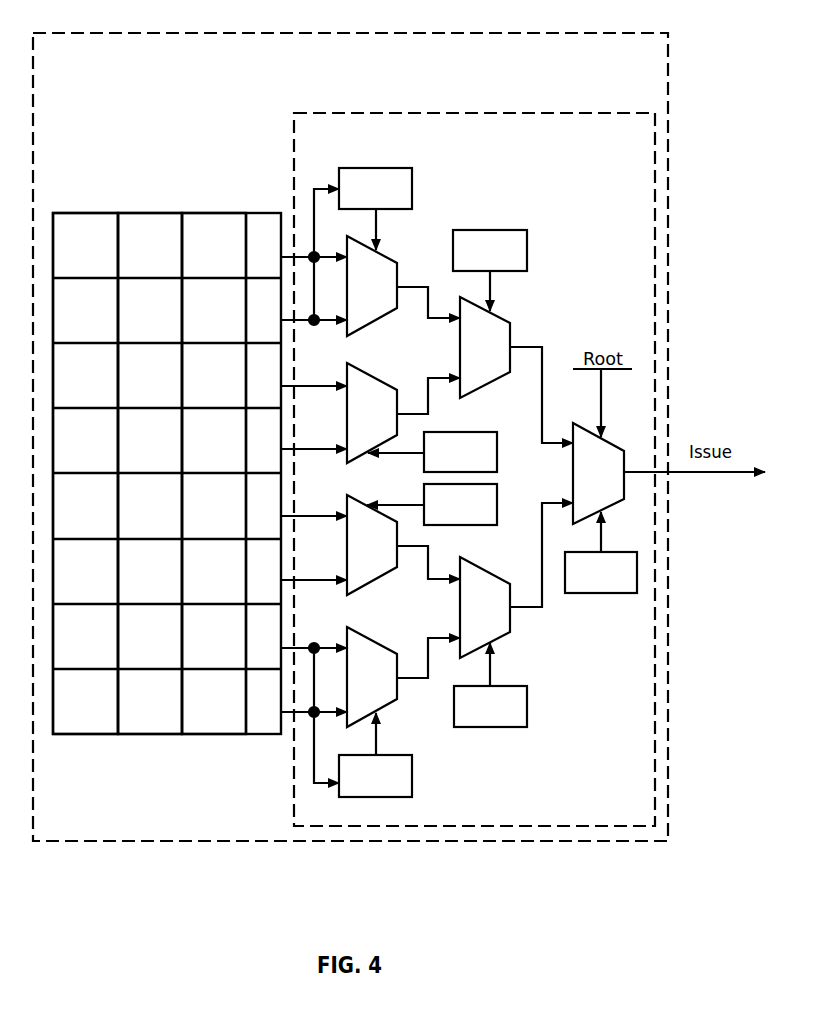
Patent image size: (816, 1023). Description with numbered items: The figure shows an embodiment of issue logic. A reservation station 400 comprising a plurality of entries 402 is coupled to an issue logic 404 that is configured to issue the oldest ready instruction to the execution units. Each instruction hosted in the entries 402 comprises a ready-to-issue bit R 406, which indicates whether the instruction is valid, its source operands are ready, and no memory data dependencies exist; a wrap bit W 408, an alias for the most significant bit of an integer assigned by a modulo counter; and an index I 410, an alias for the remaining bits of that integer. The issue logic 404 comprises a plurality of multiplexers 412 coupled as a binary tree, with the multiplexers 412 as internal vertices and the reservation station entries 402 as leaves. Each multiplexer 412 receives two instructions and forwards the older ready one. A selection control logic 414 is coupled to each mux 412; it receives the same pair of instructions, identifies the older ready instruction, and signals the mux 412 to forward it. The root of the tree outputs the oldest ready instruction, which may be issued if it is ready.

The reservation station 400 is at (266, 84).
The entries 402 is at (204, 181).
The issue logic 404 is at (634, 159).
The ready-to-issue bit R 406 is at (69, 269).
The wrap bit W 408 is at (134, 269).
The index I 410 is at (198, 269).
The multiplexer 412 is at (356, 297).
The selection control logic 414 is at (360, 201).